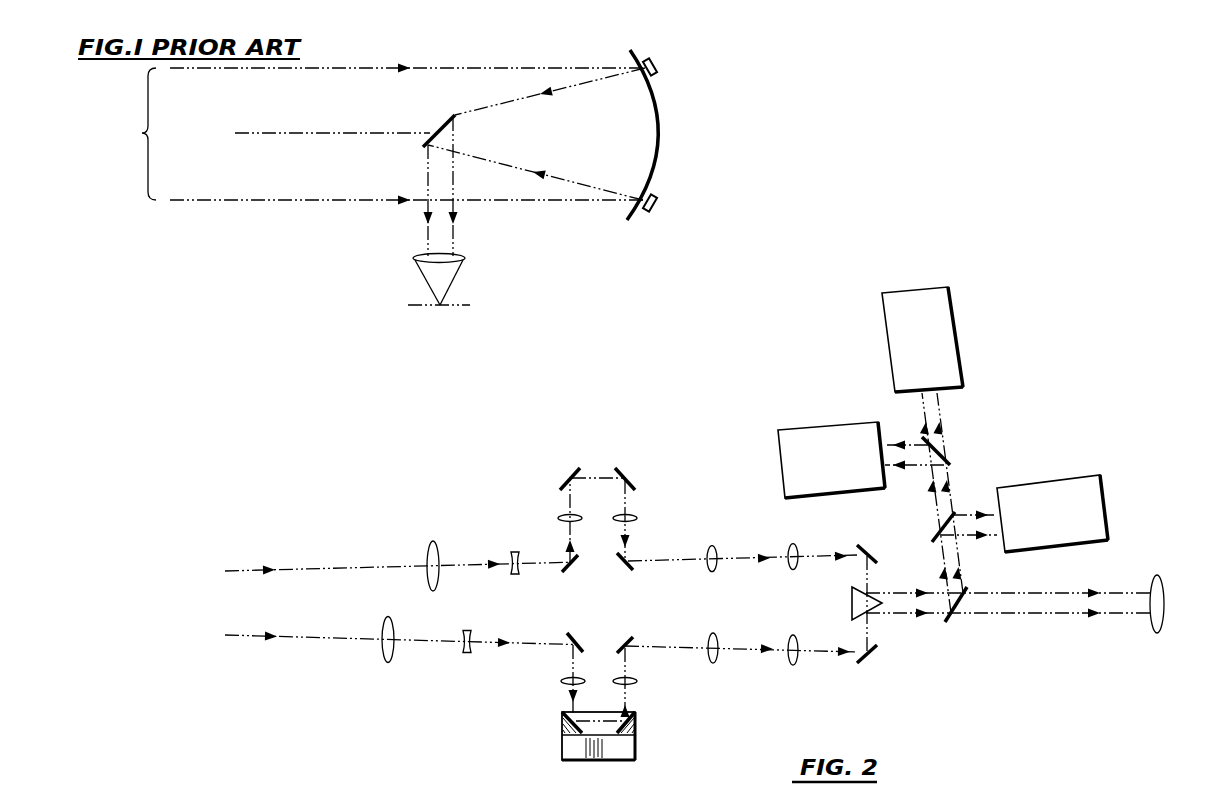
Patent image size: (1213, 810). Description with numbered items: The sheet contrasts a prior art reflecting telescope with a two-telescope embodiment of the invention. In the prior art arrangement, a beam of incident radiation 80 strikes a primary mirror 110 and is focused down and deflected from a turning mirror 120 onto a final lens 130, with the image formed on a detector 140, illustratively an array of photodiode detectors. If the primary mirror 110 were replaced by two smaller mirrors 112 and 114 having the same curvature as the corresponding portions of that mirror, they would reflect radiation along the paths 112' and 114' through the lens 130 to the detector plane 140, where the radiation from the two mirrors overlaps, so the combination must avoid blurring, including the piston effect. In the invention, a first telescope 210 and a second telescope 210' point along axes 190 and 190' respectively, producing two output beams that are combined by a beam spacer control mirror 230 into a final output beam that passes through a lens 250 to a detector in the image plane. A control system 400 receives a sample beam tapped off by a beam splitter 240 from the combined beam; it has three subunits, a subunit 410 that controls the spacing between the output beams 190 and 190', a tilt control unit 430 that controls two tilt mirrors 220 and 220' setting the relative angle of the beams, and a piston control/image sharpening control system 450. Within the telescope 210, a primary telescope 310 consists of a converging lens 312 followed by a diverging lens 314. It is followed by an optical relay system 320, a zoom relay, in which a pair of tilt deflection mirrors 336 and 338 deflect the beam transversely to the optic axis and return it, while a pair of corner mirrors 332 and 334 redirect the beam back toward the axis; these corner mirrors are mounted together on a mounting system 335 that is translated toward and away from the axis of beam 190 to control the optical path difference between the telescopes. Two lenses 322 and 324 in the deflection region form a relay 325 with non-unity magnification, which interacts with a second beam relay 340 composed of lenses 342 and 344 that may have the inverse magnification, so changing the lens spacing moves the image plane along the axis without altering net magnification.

In FIG. 1, the beam of incident radiation 80 is at (378, 134).
In FIG. 1, the primary mirror 110 is at (630, 53).
In FIG. 1, the smaller mirror 112 is at (661, 56).
In FIG. 1, the smaller mirror 114 is at (668, 191).
In FIG. 1, the turning mirror 120 is at (451, 116).
In FIG. 1, the final lens 130 is at (458, 257).
In FIG. 1, the radiation path 112' is at (467, 282).
In FIG. 1, the radiation path 114' is at (416, 282).
In FIG. 1, the detector 140 is at (456, 306).
In FIG. 2, the axis 190 is at (643, 639).
In FIG. 2, the axis 190' is at (646, 567).
In FIG. 2, the first telescope 210 is at (884, 698).
In FIG. 2, the second telescope 210' is at (892, 521).
In FIG. 2, the tilt mirror 220 is at (885, 653).
In FIG. 2, the tilt mirror 220' is at (888, 557).
In FIG. 2, the beam spacer control mirror 230 is at (852, 603).
In FIG. 2, the beam splitter 240 is at (949, 625).
In FIG. 2, the lens 250 is at (1161, 583).
In FIG. 2, the primary telescope 310 is at (441, 672).
In FIG. 2, the converging lens 312 is at (390, 621).
In FIG. 2, the diverging lens 314 is at (467, 632).
In FIG. 2, the optical relay system 320 is at (652, 724).
In FIG. 2, the lens 322 is at (562, 680).
In FIG. 2, the lens 324 is at (636, 681).
In FIG. 2, the relay 325 is at (553, 686).
In FIG. 2, the corner mirror 332 is at (633, 713).
In FIG. 2, the corner mirror 334 is at (566, 713).
In FIG. 2, the mounting system 335 is at (583, 756).
In FIG. 2, the tilt deflection mirror 336 is at (588, 624).
In FIG. 2, the tilt deflection mirror 338 is at (623, 640).
In FIG. 2, the second beam relay 340 is at (806, 637).
In FIG. 2, the lens 342 is at (714, 665).
In FIG. 2, the lens 344 is at (793, 666).
In FIG. 2, the control system 400 is at (1076, 381).
In FIG. 2, the beam spacing control subunit 410 is at (1035, 525).
In FIG. 2, the tilt control unit 430 is at (811, 473).
In FIG. 2, the piston control/image sharpening control system 450 is at (903, 350).